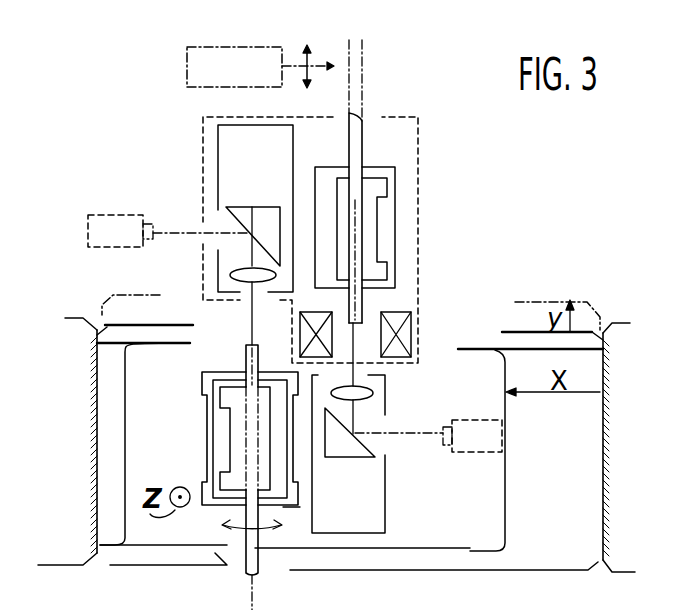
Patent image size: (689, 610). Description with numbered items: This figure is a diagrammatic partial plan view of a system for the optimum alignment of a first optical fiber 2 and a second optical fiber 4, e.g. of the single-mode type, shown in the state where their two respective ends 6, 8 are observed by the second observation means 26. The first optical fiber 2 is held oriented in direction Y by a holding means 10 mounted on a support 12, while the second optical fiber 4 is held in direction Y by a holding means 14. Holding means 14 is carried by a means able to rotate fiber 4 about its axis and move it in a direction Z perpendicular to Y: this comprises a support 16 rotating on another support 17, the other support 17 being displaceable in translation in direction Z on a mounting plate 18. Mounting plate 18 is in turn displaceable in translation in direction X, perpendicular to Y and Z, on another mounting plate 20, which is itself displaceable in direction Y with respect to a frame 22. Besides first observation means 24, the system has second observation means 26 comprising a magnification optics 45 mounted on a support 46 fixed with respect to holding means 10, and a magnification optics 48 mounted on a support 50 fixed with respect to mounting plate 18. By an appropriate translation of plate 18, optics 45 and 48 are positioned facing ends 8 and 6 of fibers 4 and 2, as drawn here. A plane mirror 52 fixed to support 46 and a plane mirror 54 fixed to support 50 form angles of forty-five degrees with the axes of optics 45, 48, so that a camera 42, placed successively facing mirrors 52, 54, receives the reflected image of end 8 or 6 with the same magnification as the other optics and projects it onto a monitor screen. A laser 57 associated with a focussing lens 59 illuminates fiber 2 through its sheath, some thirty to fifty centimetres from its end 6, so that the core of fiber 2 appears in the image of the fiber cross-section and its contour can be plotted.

The first optical fiber 2 is at (362, 142).
The second optical fiber 4 is at (227, 553).
The end of first fiber 6 is at (362, 327).
The end of second fiber 8 is at (252, 342).
The holding means 10 is at (396, 225).
The support 12 is at (373, 180).
The holding means 14 is at (235, 424).
The rotating support 16 is at (212, 455).
The other support 17 is at (293, 507).
The mounting plate 18 is at (505, 532).
The other mounting plate 20 is at (137, 553).
The frame 22 is at (100, 386).
The first observation means 24 is at (420, 338).
The second observation means 26 is at (158, 135).
The camera 42 is at (107, 213).
The magnification optics 45 is at (232, 273).
The support 46 is at (272, 171).
The magnification optics 48 is at (374, 393).
The support 50 is at (384, 519).
The mirror 52 is at (227, 219).
The mirror 54 is at (372, 446).
The laser 57 is at (188, 65).
The focussing lens 59 is at (307, 71).